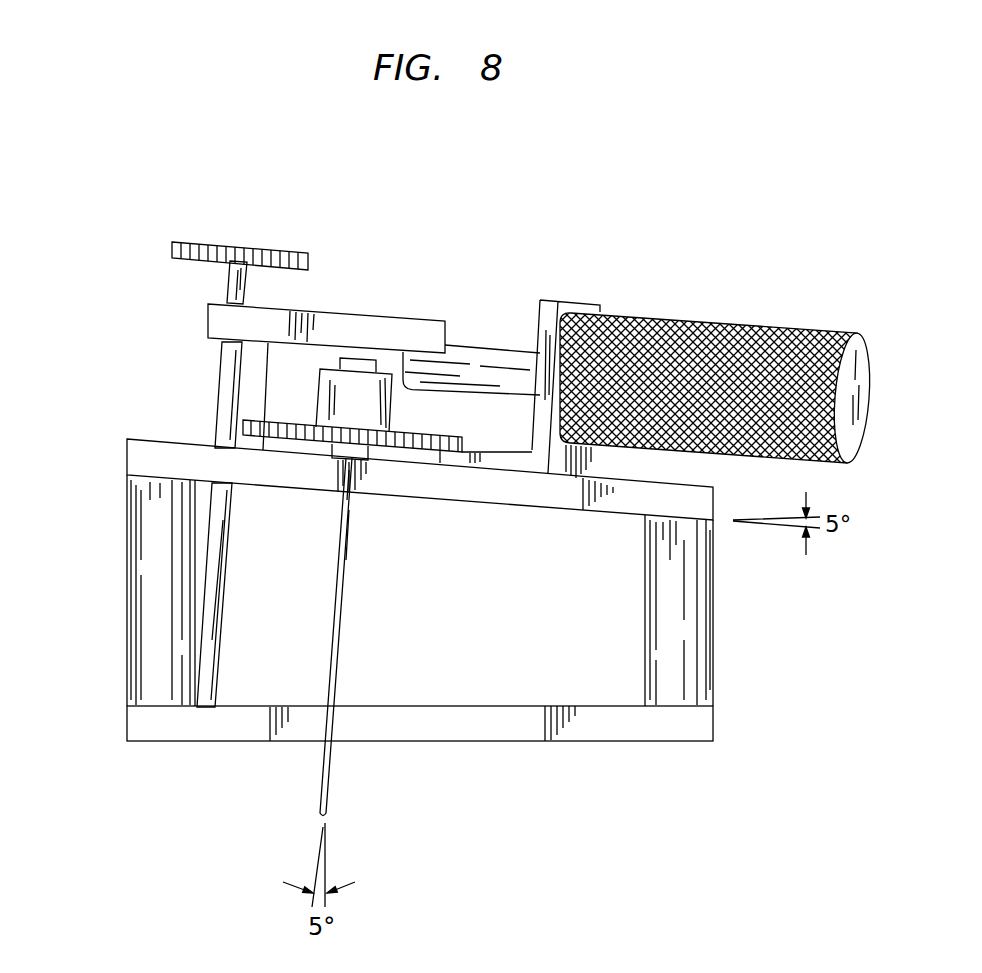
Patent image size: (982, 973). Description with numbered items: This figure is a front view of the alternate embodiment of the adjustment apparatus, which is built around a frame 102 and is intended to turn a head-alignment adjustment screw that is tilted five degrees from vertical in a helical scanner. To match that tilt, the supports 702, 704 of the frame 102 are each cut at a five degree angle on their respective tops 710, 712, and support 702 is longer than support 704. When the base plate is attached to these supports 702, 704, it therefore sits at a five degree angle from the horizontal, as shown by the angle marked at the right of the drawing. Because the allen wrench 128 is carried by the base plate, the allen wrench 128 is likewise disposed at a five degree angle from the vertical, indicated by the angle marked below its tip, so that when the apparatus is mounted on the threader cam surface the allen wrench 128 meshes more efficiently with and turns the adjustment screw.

The frame 102 is at (137, 455).
The allen wrench 128 is at (333, 770).
The support 702 is at (152, 684).
The support 704 is at (688, 672).
The top 710 is at (157, 482).
The top 712 is at (678, 522).